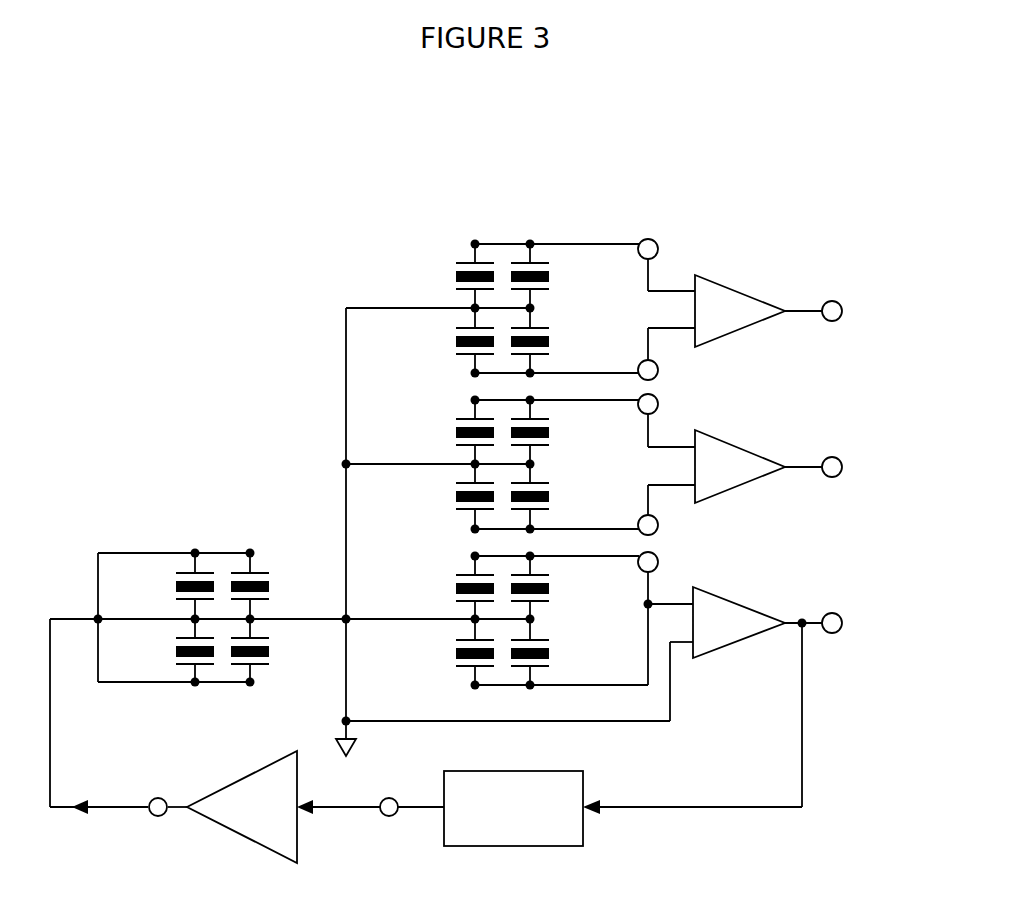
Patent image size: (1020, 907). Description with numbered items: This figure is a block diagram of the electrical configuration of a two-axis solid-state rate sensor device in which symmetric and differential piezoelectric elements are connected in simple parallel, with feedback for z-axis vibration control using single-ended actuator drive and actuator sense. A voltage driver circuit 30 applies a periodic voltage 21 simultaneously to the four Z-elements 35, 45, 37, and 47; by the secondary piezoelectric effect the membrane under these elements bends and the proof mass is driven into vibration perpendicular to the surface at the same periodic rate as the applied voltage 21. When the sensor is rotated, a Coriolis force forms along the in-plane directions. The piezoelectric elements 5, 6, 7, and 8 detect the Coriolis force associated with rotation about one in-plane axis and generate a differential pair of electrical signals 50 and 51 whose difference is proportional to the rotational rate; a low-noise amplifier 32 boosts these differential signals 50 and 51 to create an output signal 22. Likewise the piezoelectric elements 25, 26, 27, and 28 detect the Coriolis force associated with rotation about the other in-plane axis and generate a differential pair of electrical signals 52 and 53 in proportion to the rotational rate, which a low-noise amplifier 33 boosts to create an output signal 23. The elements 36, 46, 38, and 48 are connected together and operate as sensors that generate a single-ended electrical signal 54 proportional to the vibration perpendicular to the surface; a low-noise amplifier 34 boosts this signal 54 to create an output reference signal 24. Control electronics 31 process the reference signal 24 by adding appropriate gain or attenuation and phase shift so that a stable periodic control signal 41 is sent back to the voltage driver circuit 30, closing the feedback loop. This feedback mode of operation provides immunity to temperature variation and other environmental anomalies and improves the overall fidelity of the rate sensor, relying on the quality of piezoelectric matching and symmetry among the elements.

The piezoelectric element 5 is at (457, 275).
The piezoelectric element 6 is at (457, 338).
The piezoelectric element 7 is at (548, 338).
The piezoelectric element 8 is at (548, 278).
The piezoelectric element 25 is at (457, 430).
The piezoelectric element 26 is at (457, 495).
The piezoelectric element 27 is at (547, 497).
The piezoelectric element 28 is at (547, 431).
The Z-element 35 is at (175, 585).
The element 36 is at (457, 587).
The Z-element 37 is at (175, 648).
The element 38 is at (457, 652).
The Z-element 45 is at (272, 585).
The element 46 is at (547, 590).
The Z-element 47 is at (272, 648).
The element 48 is at (547, 652).
The low-noise amplifier 32 is at (732, 295).
The low-noise amplifier 33 is at (732, 450).
The low-noise amplifier 34 is at (723, 607).
The output signal 22 is at (843, 302).
The output signal 23 is at (845, 458).
The output reference signal 24 is at (845, 614).
The electrical signal 50 is at (656, 241).
The electrical signal 51 is at (660, 368).
The electrical signal 52 is at (660, 402).
The electrical signal 53 is at (660, 524).
The single-ended electrical signal 54 is at (660, 560).
The periodic voltage 21 is at (155, 815).
The voltage driver circuit 30 is at (287, 832).
The periodic control signal 41 is at (385, 818).
The control electronics 31 is at (528, 837).